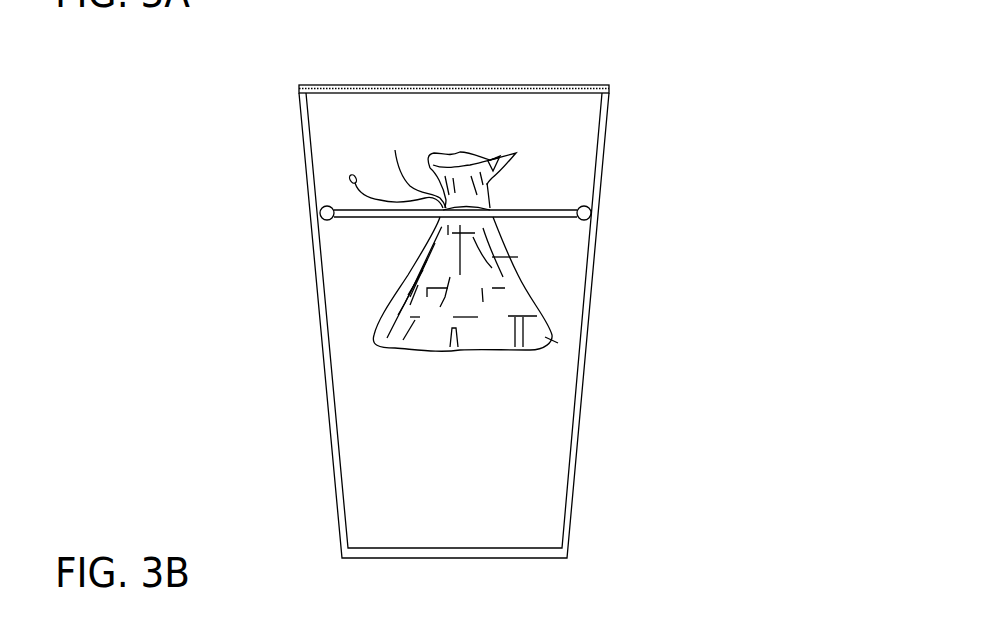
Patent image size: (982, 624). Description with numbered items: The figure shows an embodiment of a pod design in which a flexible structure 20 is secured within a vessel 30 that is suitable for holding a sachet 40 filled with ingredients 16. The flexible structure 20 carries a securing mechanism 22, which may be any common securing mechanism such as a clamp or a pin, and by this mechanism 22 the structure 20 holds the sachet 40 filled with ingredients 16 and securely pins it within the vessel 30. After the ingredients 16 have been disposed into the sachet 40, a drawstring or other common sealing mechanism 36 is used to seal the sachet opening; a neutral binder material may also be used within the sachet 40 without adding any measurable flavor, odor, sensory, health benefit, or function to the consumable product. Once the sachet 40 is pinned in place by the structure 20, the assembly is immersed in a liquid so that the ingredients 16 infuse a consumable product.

The ingredients 16 is at (455, 269).
The flexible structure 20 is at (592, 214).
The securing mechanism 22 is at (491, 200).
The vessel 30 is at (611, 103).
The sealing mechanism 36 is at (388, 162).
The sachet 40 is at (535, 301).